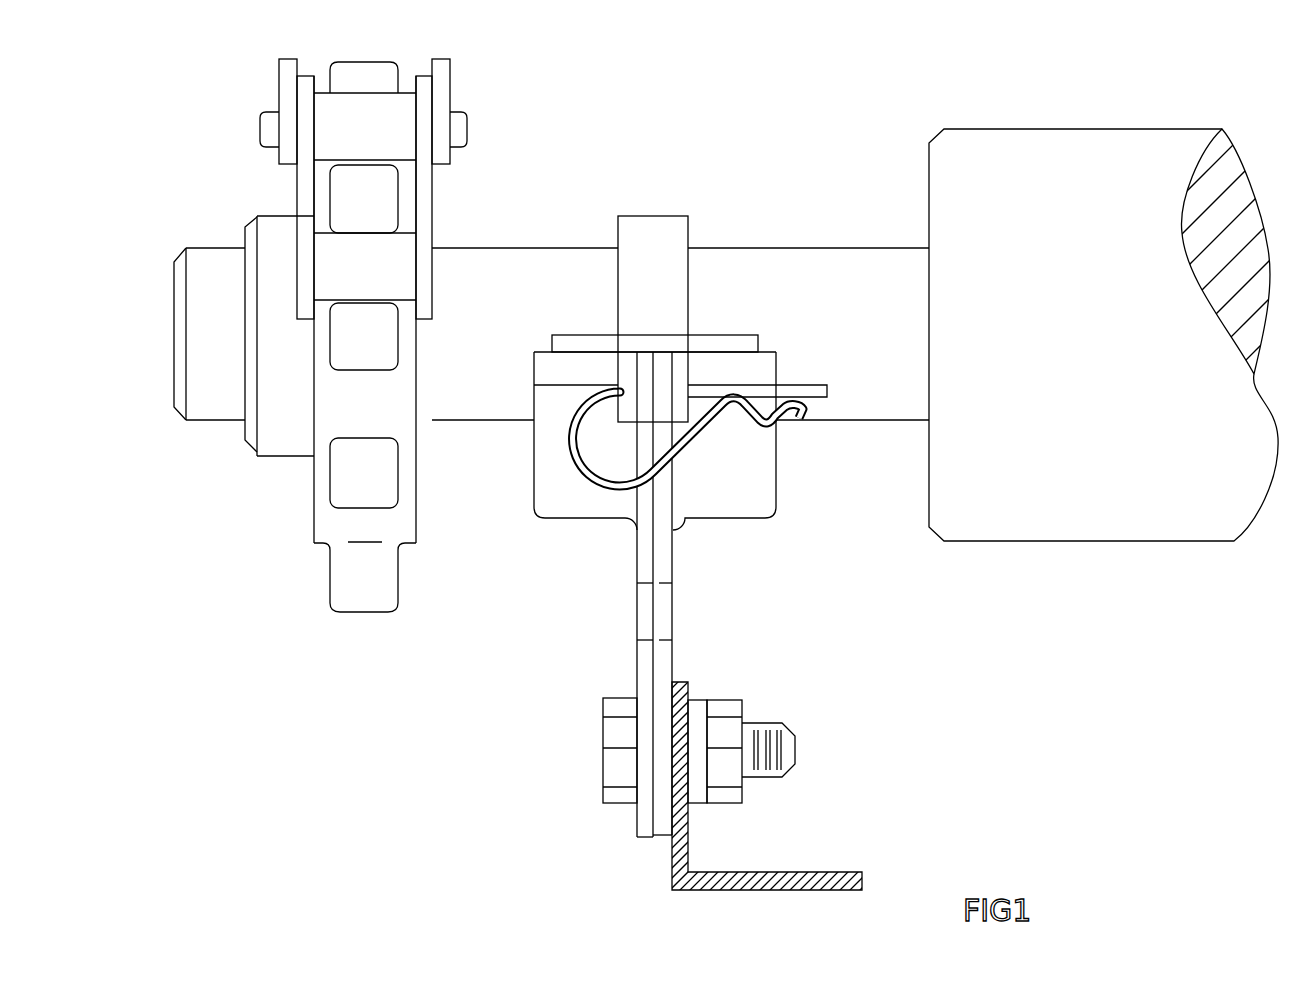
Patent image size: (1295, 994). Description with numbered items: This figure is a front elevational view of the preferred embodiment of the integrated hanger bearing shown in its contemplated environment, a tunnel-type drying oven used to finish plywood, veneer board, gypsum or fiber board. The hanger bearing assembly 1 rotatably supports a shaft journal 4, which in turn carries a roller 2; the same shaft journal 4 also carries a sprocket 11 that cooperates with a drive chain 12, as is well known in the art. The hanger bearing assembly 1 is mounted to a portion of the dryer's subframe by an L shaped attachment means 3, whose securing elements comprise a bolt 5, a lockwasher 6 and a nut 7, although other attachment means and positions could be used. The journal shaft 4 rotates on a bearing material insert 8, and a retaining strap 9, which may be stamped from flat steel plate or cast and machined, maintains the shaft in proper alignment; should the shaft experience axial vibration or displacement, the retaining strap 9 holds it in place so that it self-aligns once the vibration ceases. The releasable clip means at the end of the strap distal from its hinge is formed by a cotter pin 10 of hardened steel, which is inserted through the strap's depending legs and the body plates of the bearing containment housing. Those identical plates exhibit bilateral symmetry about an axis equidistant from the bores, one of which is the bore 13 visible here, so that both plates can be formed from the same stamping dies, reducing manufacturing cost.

The hanger bearing assembly 1 is at (778, 468).
The roller 2 is at (1061, 129).
The L shaped attachment means 3 is at (763, 872).
The shaft journal 4 is at (773, 248).
The bolt 5 is at (603, 733).
The lockwasher 6 is at (695, 700).
The nut 7 is at (743, 705).
The bearing material insert 8 is at (592, 335).
The retaining strap 9 is at (648, 216).
The cotter pin 10 is at (792, 383).
The sprocket 11 is at (312, 509).
The drive chain 12 is at (275, 103).
The bore 13 is at (637, 697).